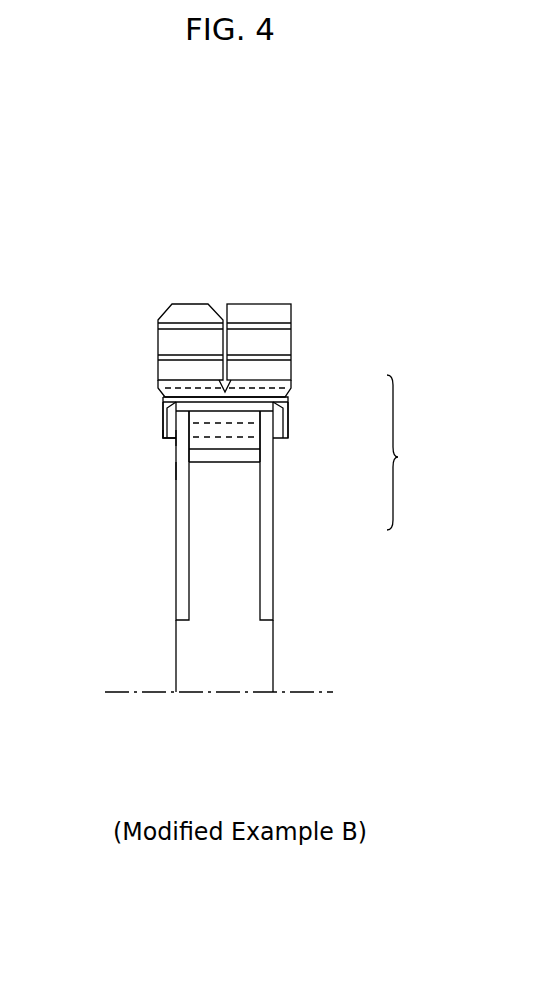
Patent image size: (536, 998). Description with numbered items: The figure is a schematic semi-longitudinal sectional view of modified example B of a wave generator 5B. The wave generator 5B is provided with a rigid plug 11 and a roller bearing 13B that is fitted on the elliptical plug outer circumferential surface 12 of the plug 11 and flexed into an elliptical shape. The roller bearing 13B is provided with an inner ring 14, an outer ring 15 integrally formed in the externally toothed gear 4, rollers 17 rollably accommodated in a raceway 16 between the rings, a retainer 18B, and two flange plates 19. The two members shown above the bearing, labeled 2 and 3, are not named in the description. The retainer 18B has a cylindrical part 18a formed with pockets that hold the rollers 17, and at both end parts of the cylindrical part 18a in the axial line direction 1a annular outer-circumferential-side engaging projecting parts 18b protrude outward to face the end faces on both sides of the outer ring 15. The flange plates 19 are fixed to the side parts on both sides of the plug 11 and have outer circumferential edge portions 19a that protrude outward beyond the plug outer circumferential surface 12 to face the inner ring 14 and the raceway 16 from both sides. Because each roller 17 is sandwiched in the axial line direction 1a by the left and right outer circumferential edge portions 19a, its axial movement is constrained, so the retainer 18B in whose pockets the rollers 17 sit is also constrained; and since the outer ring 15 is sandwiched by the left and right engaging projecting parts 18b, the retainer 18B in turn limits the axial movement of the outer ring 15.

The second terminal block 2 is at (300, 312).
The first terminal block 3 is at (153, 312).
The externally toothed gear 4 is at (142, 402).
The wave generator 5B is at (154, 564).
The plug 11 is at (233, 602).
The plug outer circumferential surface 12 is at (207, 461).
The roller bearing 13B is at (417, 452).
The inner ring 14 is at (250, 458).
The outer ring 15 is at (262, 396).
The raceway 16 is at (246, 457).
The rollers 17 is at (258, 434).
The cylindrical part 18a is at (163, 438).
The outer-circumferential-side engaging projecting parts 18b is at (163, 415).
The retainer 18B is at (284, 416).
The flange plates 19 is at (183, 588).
The outer circumferential edge portions 19a is at (176, 438).
The axial line direction 1a is at (303, 693).